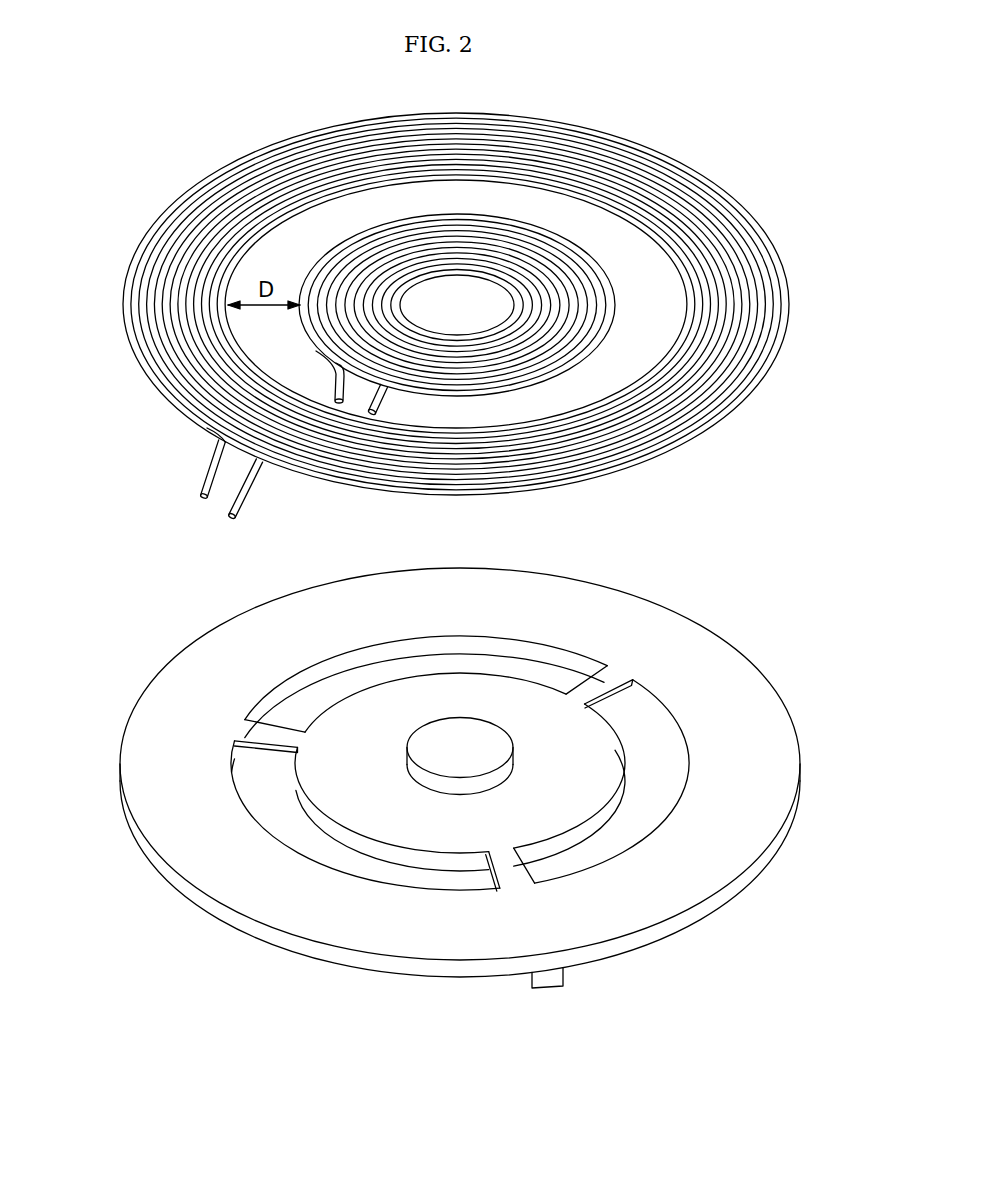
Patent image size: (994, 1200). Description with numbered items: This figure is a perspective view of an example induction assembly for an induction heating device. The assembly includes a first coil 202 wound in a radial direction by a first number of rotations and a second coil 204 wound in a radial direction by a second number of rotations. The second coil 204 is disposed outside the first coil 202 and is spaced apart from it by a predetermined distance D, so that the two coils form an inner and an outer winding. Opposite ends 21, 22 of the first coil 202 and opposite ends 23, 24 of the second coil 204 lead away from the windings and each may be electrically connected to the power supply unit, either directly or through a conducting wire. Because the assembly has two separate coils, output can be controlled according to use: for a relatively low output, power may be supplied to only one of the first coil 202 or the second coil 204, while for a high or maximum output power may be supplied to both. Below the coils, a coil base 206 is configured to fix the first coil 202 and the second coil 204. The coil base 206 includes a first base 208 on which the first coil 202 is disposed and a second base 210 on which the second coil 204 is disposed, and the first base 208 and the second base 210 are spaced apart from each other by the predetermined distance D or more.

The first coil 202 is at (600, 353).
The second coil 204 is at (152, 233).
The end of first coil 21 is at (385, 413).
The end of first coil 22 is at (337, 404).
The end of second coil 23 is at (232, 511).
The end of second coil 24 is at (203, 488).
The coil base 206 is at (460, 835).
The first base 208 is at (415, 838).
The second base 210 is at (238, 880).